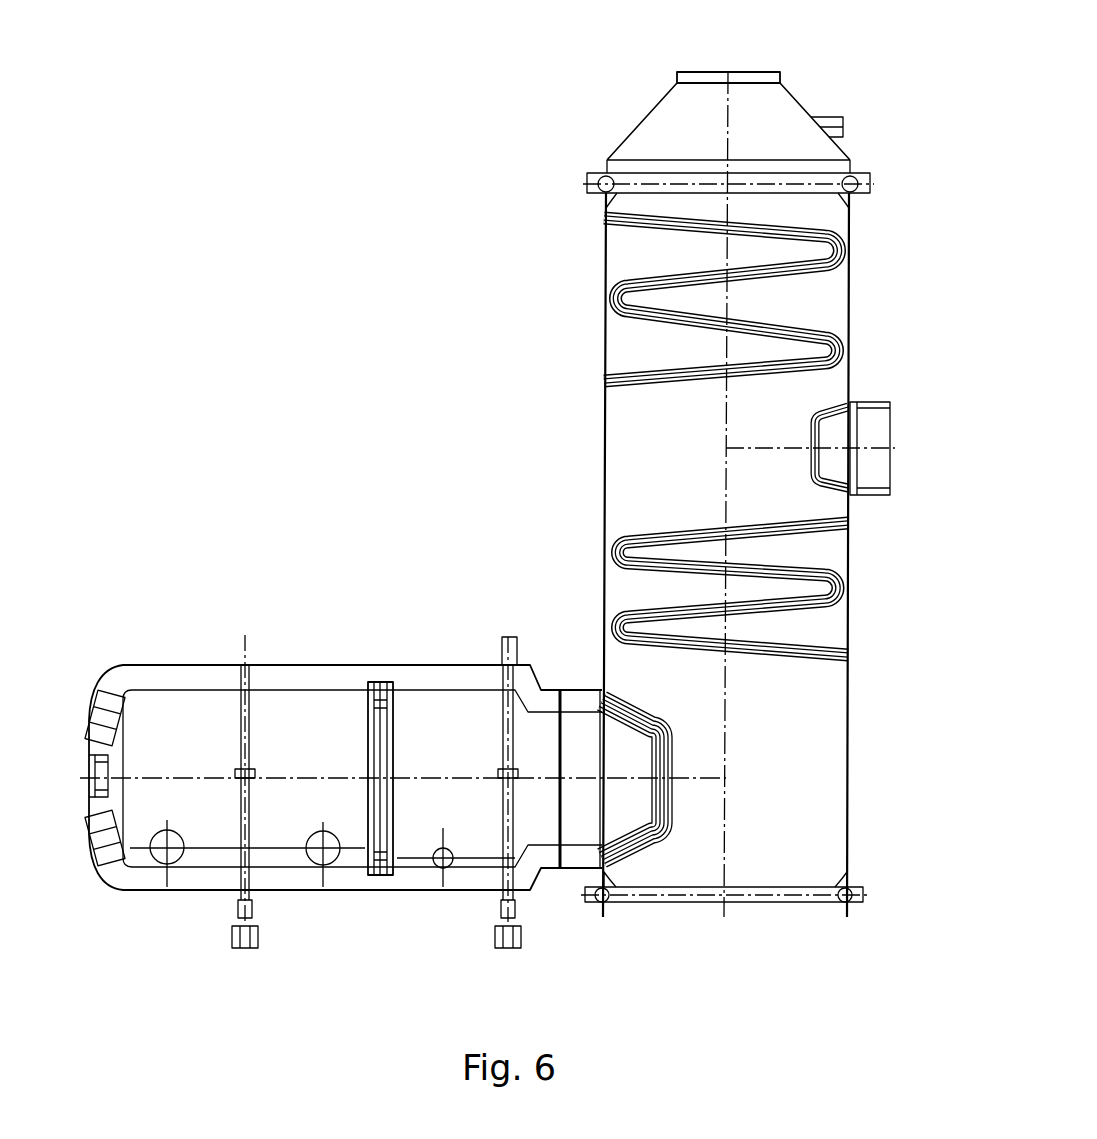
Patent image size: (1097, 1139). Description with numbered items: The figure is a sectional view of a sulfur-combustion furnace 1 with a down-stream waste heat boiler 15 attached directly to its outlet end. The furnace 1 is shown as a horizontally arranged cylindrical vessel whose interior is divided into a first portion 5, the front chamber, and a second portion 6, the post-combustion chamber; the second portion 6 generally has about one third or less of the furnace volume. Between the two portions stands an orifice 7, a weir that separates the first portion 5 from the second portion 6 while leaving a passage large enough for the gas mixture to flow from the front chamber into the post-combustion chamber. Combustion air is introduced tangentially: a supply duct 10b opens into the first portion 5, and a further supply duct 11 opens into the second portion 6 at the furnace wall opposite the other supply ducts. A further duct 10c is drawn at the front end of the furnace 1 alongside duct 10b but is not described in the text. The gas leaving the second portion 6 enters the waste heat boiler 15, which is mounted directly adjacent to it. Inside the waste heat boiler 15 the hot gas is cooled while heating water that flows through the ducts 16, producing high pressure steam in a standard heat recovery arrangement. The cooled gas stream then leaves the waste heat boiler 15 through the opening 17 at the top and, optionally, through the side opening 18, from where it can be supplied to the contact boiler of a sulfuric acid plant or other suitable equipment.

The furnace 1 is at (278, 615).
The first portion 5 is at (303, 764).
The second portion 6 is at (448, 764).
The orifice 7 is at (390, 840).
The supply duct 10b is at (310, 855).
The passage opening 10c is at (157, 853).
The supply duct 11 is at (448, 865).
The waste heat boiler 15 is at (563, 367).
The ducts 16 is at (611, 226).
The opening 17 is at (716, 70).
The opening 18 is at (892, 446).